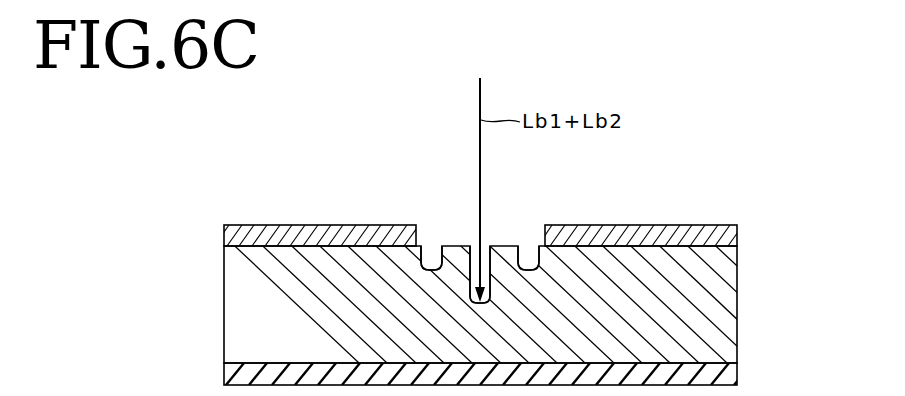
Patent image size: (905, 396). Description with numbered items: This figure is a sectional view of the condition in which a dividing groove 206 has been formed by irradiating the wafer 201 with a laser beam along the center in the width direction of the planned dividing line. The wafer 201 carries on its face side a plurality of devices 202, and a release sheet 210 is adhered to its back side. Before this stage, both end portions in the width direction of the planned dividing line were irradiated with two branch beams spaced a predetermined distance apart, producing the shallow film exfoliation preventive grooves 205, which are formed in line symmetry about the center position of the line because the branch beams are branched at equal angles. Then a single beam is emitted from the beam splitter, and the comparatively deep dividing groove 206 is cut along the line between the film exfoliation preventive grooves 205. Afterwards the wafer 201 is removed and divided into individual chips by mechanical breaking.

The wafer 201 is at (728, 298).
The devices 202 is at (312, 228).
The film exfoliation preventive grooves 205 is at (433, 250).
The dividing groove 206 is at (488, 246).
The release sheet 210 is at (728, 374).